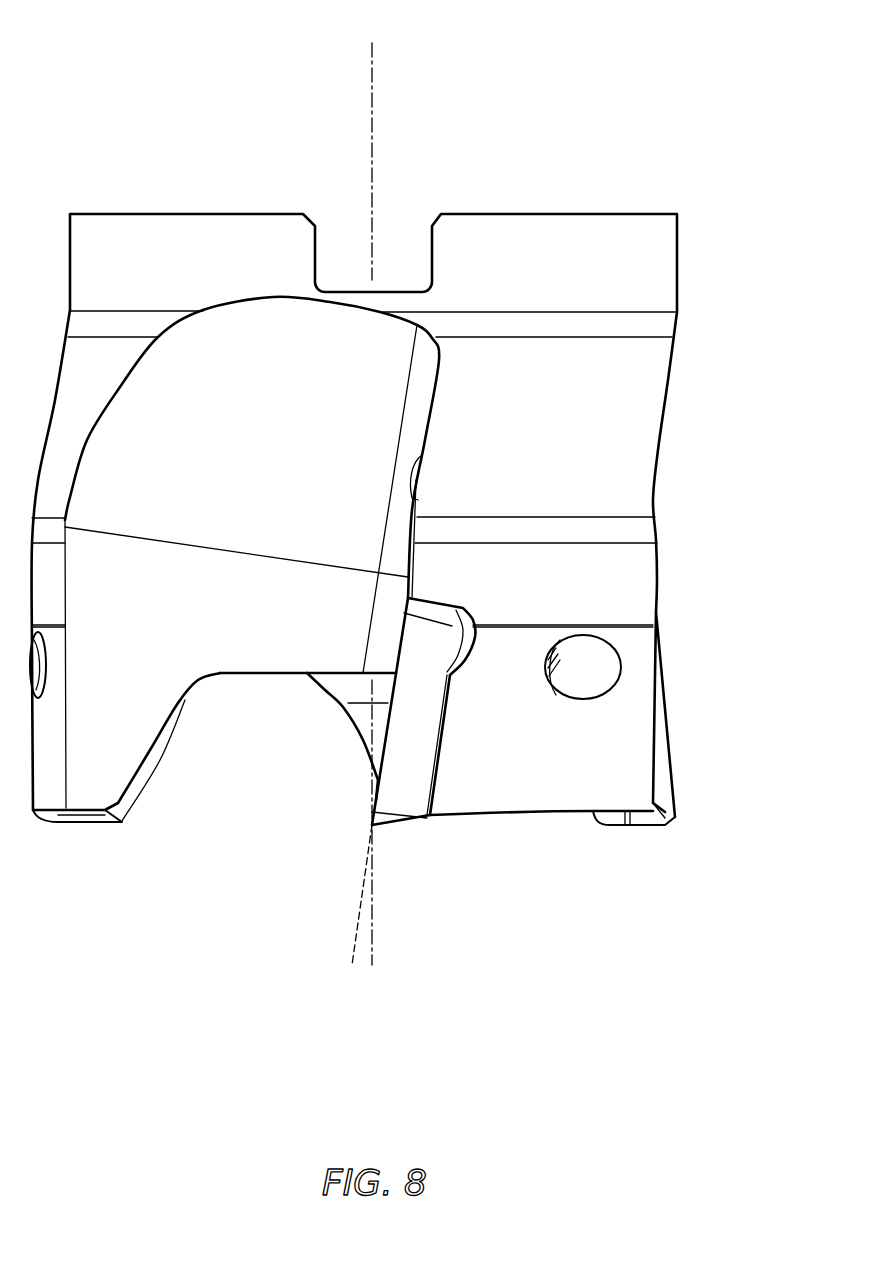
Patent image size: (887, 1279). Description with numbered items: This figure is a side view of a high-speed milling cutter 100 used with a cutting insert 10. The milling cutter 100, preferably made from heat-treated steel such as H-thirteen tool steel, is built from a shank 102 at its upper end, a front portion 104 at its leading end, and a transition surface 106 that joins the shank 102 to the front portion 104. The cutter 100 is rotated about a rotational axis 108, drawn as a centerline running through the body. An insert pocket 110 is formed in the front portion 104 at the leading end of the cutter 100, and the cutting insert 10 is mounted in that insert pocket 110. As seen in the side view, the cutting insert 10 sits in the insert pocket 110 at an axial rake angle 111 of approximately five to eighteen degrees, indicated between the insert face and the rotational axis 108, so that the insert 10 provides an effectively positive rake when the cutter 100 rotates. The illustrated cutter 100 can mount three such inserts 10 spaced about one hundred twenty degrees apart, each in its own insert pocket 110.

The milling cutter 100 is at (97, 90).
The shank 102 is at (678, 268).
The front portion 104 is at (655, 587).
The transition surface 106 is at (665, 365).
The rotational axis 108 is at (373, 60).
The cutting insert 10 is at (443, 608).
The insert pocket 110 is at (448, 855).
The axial rake angle 111 is at (422, 897).